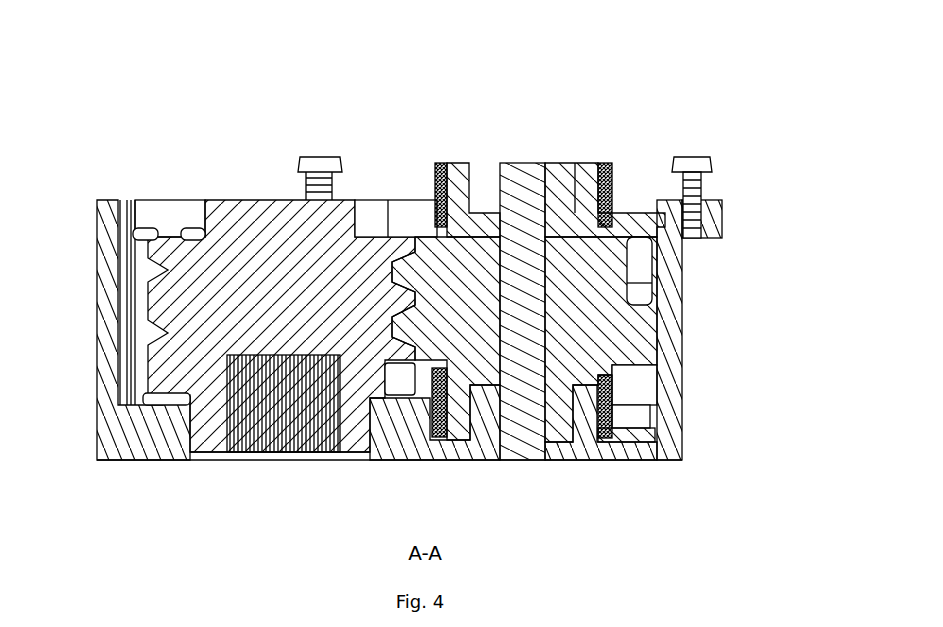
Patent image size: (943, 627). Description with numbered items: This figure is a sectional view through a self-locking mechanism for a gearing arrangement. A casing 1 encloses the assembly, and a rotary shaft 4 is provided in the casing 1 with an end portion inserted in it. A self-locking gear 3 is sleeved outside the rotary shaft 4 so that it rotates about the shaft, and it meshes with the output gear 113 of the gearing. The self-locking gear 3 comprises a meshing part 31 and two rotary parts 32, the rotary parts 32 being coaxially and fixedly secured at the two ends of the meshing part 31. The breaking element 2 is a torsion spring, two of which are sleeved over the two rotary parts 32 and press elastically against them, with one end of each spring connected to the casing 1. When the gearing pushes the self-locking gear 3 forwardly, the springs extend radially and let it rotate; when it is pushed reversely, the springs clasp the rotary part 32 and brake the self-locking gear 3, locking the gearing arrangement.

The casing 1 is at (153, 430).
The breaking element 2 is at (605, 182).
The self-locking gear 3 is at (612, 350).
The meshing part 31 is at (583, 315).
The rotary part 32 is at (553, 165).
The rotary shaft 4 is at (540, 370).
The output gear 113 is at (262, 250).